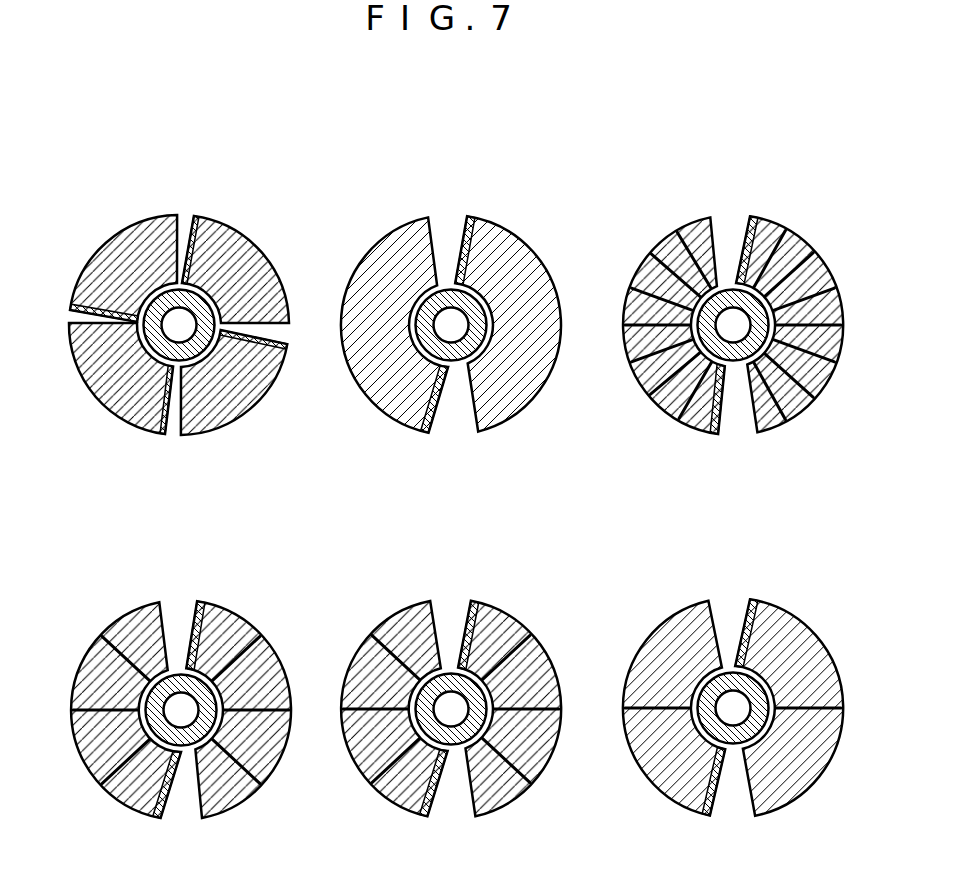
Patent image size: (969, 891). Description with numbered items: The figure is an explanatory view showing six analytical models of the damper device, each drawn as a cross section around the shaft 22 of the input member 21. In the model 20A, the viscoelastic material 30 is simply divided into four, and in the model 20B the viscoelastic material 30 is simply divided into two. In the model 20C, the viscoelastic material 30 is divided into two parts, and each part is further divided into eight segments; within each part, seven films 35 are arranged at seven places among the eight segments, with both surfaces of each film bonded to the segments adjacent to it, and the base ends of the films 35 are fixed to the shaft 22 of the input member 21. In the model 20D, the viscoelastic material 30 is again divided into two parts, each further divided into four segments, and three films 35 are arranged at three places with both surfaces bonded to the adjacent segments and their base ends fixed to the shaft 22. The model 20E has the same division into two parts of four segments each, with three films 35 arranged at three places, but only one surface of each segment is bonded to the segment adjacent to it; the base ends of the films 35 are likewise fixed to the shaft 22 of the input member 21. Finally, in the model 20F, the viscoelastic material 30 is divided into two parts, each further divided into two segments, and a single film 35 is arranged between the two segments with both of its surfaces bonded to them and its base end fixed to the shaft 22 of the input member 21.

The model 20A is at (184, 149).
The model 20B is at (455, 149).
The model 20C is at (735, 149).
The model 20D is at (186, 536).
The model 20E is at (455, 536).
The model 20F is at (734, 536).
The input member 21 is at (184, 216).
The shaft 22 is at (196, 355).
The viscoelastic material 30 is at (110, 249).
The film 35 is at (771, 250).